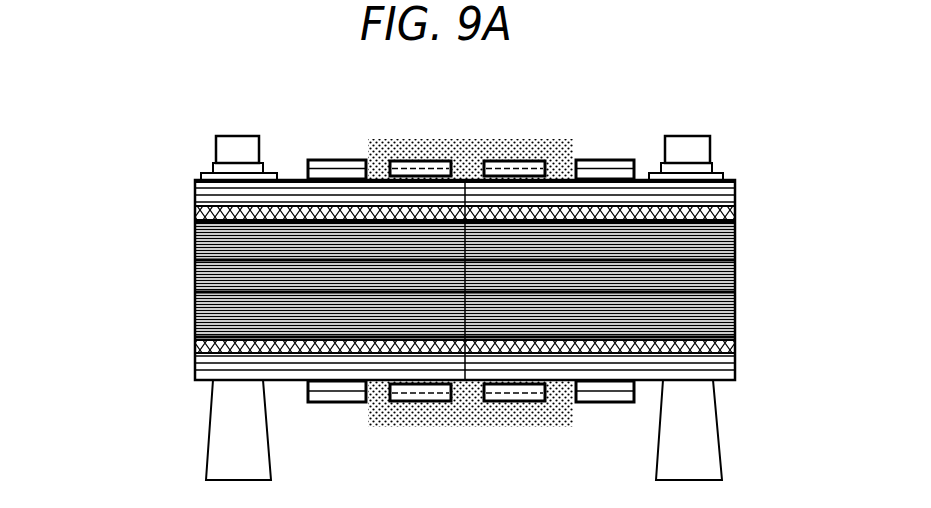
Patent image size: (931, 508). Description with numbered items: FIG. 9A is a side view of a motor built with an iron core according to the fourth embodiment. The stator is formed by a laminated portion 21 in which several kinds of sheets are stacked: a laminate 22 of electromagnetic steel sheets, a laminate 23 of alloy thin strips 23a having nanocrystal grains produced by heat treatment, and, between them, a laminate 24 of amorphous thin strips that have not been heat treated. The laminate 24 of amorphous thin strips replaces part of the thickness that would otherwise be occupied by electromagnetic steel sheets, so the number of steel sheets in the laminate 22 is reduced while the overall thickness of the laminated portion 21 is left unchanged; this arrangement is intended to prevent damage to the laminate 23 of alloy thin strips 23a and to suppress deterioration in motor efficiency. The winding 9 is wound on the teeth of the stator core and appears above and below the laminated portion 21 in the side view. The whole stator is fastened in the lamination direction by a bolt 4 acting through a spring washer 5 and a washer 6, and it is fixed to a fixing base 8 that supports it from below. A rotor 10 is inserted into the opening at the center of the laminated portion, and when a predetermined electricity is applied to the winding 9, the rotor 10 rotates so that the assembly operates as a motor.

The bolt 4 is at (710, 140).
The spring washer 5 is at (712, 165).
The washer 6 is at (722, 175).
The fixing base 8 is at (708, 422).
The winding 9 is at (328, 156).
The rotor 10 is at (478, 139).
The laminated portion 21 is at (190, 195).
The laminate of electromagnetic steel sheets 22 is at (762, 367).
The laminate of alloy thin strips 23 is at (757, 280).
The alloy thin strip 23a is at (212, 258).
The laminate of amorphous thin strips 24 is at (762, 346).